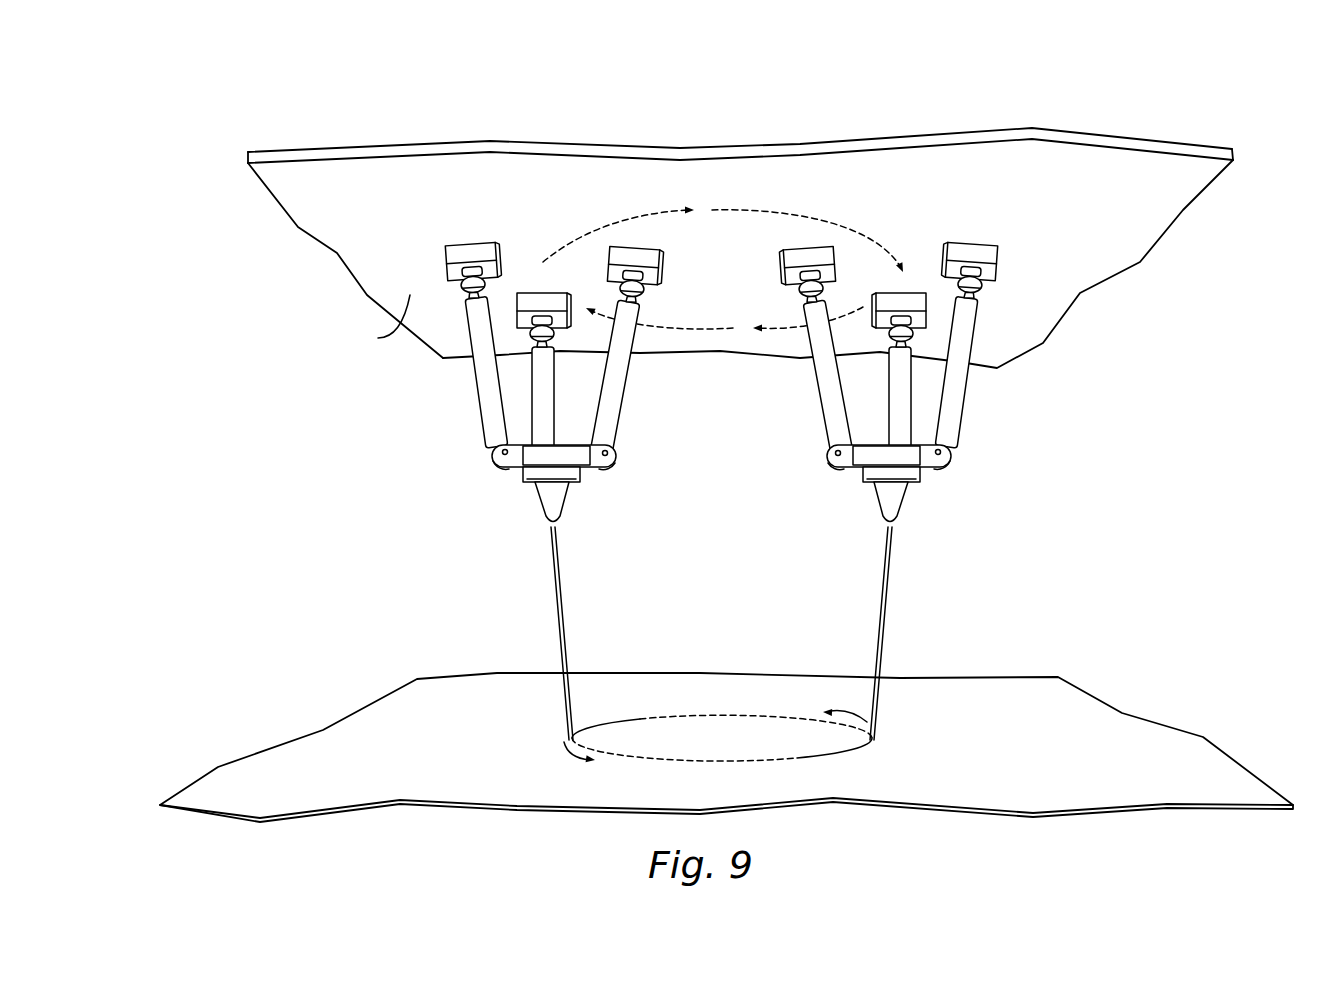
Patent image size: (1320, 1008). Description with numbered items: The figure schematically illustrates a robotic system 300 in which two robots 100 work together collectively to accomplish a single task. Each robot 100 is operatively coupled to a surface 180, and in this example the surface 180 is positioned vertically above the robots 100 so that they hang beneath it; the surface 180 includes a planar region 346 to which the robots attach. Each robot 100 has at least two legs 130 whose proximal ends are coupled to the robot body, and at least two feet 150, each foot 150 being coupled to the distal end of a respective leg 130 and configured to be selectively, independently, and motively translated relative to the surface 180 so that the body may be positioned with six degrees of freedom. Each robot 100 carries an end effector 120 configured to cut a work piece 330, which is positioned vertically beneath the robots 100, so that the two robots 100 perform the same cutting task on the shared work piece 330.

The robotic system 300 is at (235, 91).
The surface 180 is at (336, 258).
The planar region 346 is at (375, 322).
The foot 150 is at (600, 266).
The leg 130 is at (618, 400).
The robot 100 is at (634, 460).
The end effector 120 is at (887, 503).
The work piece 330 is at (443, 777).